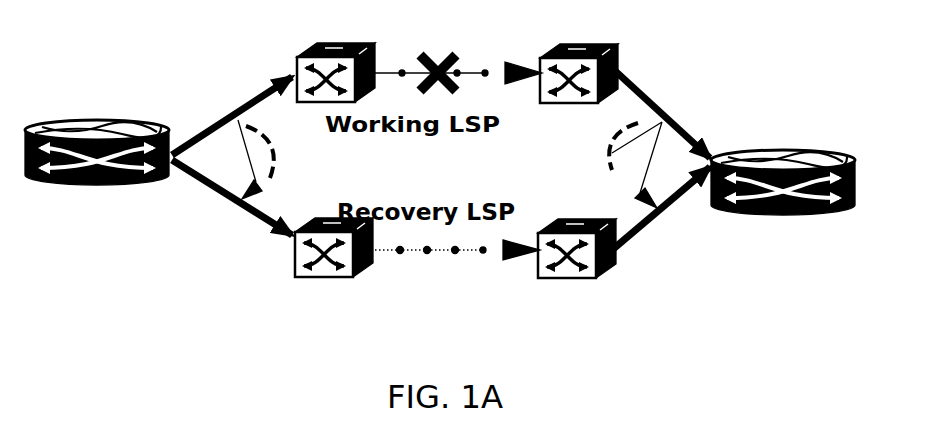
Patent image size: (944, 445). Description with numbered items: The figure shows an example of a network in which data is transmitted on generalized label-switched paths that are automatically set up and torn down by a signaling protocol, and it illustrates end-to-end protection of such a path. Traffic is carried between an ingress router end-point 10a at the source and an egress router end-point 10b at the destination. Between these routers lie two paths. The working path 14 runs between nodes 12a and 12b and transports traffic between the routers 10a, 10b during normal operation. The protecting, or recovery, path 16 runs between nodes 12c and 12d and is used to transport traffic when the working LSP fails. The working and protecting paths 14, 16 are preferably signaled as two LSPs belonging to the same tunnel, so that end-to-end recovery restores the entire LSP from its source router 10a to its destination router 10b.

The ingress router end-point 10a is at (124, 119).
The egress router end-point 10b is at (764, 150).
The node 12a is at (345, 43).
The node 12b is at (590, 44).
The node 12c is at (314, 279).
The node 12d is at (565, 280).
The working path 14 is at (486, 70).
The protecting path 16 is at (455, 253).